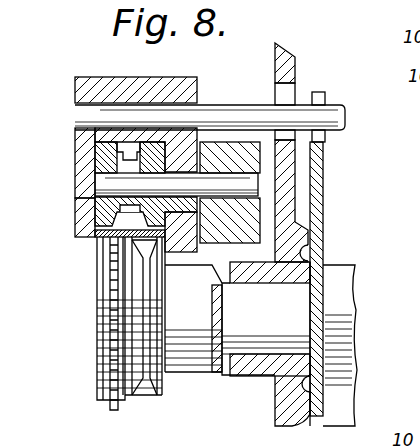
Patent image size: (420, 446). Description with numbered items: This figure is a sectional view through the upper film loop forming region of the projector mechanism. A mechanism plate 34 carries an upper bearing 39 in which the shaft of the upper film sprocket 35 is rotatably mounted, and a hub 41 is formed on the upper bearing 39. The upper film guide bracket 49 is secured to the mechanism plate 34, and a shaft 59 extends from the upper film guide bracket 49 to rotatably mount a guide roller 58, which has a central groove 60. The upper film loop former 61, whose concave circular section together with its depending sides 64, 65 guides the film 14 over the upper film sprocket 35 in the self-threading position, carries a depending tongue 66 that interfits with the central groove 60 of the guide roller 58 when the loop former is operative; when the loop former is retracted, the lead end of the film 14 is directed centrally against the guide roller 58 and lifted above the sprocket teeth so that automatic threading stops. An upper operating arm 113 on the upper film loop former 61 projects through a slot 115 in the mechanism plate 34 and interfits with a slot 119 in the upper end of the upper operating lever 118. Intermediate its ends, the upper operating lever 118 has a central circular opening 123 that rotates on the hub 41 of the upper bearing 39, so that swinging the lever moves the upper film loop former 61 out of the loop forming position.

The upper film loop former 61 is at (107, 76).
The upper operating arm 113 is at (335, 115).
The guide roller 58 is at (92, 152).
The depending side 64 is at (75, 196).
The depending tongue 66 is at (128, 150).
The depending side 65 is at (197, 142).
The shaft 59 is at (105, 178).
The upper film guide bracket 49 is at (220, 142).
The central groove 60 is at (93, 218).
The film 14 is at (97, 233).
The upper film sprocket 35 is at (115, 297).
The upper bearing 39 is at (267, 334).
The mechanism plate 34 is at (287, 62).
The central circular opening 123 is at (318, 283).
The slot 115 is at (290, 97).
The slot 119 is at (328, 92).
The upper operating lever 118 is at (331, 199).
The hub 41 is at (315, 300).